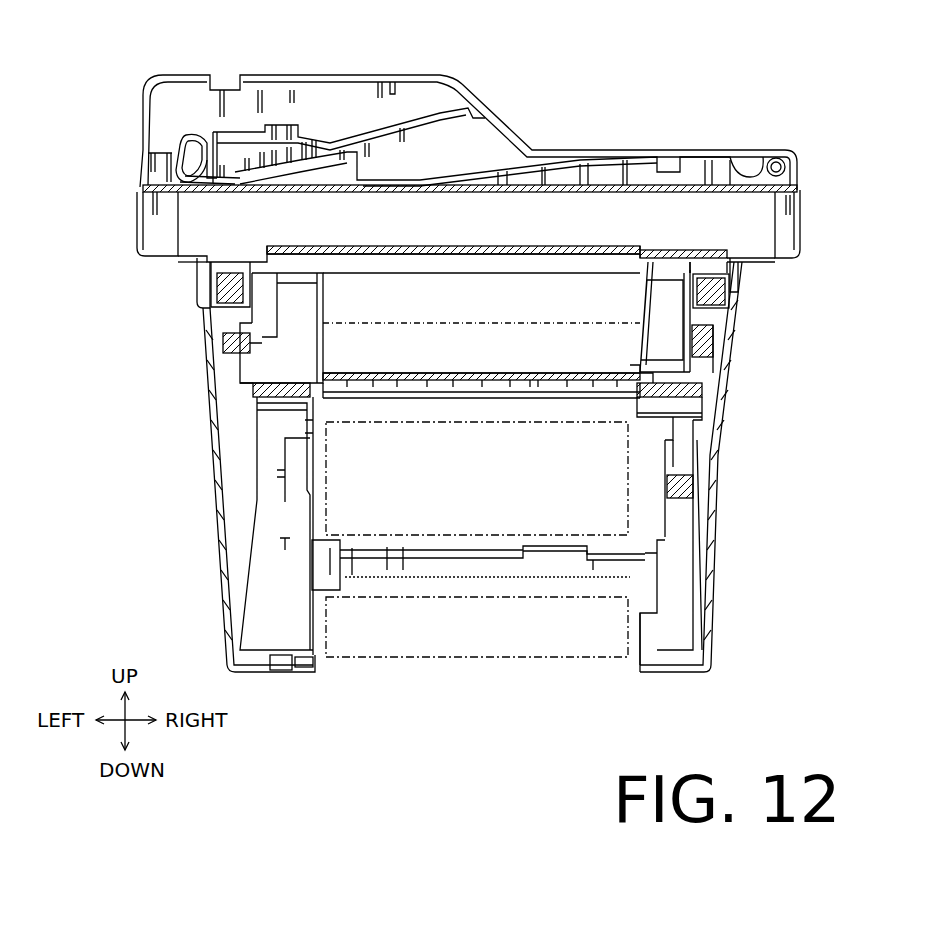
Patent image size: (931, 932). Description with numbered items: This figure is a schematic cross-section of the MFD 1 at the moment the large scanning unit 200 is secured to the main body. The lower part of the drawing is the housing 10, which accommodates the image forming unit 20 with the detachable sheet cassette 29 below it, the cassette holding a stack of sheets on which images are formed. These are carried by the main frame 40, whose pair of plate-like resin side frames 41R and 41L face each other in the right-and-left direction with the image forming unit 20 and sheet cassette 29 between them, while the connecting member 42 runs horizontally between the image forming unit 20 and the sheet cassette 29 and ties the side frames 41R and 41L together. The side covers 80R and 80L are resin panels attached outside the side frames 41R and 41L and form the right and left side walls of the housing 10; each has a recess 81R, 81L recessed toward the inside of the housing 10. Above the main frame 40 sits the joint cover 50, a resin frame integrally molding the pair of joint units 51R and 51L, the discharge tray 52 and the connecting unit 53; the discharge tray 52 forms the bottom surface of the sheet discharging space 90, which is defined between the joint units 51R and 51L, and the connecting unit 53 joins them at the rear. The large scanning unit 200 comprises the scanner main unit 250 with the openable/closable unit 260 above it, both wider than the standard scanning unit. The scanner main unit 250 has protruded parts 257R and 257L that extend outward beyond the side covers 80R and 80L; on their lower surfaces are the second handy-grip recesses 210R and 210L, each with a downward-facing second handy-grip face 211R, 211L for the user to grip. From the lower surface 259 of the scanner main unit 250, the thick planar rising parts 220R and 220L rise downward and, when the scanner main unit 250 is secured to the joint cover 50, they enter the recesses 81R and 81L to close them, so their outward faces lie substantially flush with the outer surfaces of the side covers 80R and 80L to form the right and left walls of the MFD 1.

The MFD 1 is at (778, 72).
The large scanning unit 200 is at (345, 74).
The openable/closable unit 260 is at (522, 130).
The scanner main unit 250 is at (806, 216).
The lower surface 259 is at (526, 256).
The protruded part 257L is at (135, 216).
The protruded part 257R is at (802, 246).
The second handy-grip recess 210L is at (152, 266).
The second handy-grip recess 210R is at (788, 266).
The second handy-grip face 211L is at (180, 264).
The second handy-grip face 211R is at (736, 262).
The rising part 220L is at (228, 262).
The rising part 220R is at (718, 262).
The recess 81L is at (238, 296).
The recess 81R is at (663, 272).
The joint cover 50 is at (703, 341).
The joint unit 51L is at (298, 320).
The joint unit 51R is at (664, 318).
The sheet discharging space 90 is at (481, 306).
The connecting unit 53 is at (467, 357).
The discharge tray 52 is at (523, 377).
The image forming unit 20 is at (477, 478).
The sheet cassette 29 is at (477, 627).
The main frame 40 is at (703, 512).
The side frame 41L is at (270, 617).
The side frame 41R is at (678, 570).
The connecting member 42 is at (557, 566).
The side cover 80L is at (215, 480).
The side cover 80R is at (728, 445).
The housing 10 is at (722, 618).